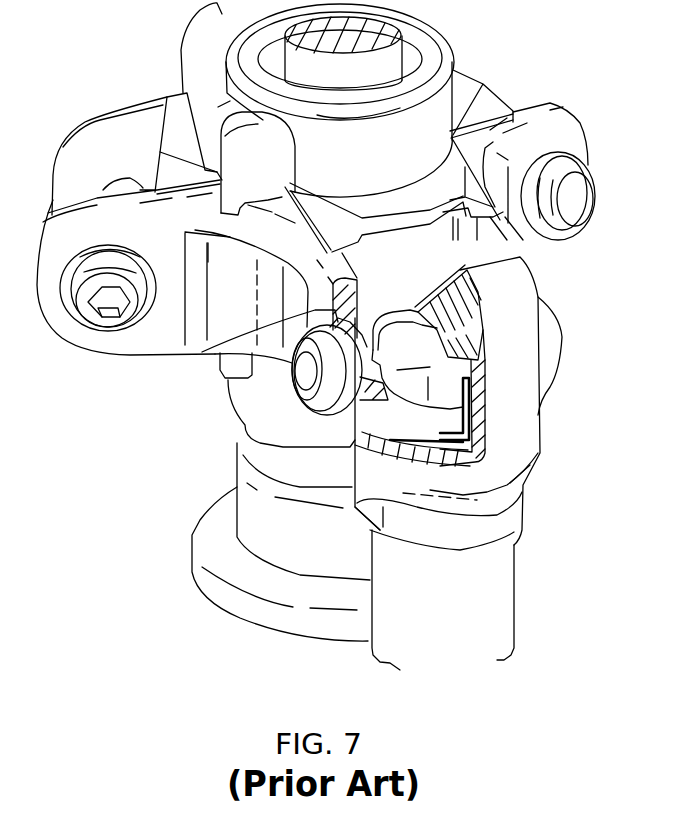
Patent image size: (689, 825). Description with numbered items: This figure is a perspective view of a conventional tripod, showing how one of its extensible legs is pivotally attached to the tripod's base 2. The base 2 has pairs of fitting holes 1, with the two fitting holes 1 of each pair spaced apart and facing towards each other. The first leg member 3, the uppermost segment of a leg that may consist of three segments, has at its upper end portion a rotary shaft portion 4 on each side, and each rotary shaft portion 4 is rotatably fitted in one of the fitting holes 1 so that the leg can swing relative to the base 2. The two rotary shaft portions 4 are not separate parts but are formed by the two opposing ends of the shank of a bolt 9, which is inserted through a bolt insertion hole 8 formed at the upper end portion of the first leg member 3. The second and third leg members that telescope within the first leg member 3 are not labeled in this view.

The fitting hole 1 is at (118, 180).
The base 2 is at (390, 123).
The first leg member 3 is at (534, 584).
The rotary shaft portion 4 is at (100, 187).
The bolt insertion hole 8 is at (438, 344).
The bolt 9 is at (413, 345).